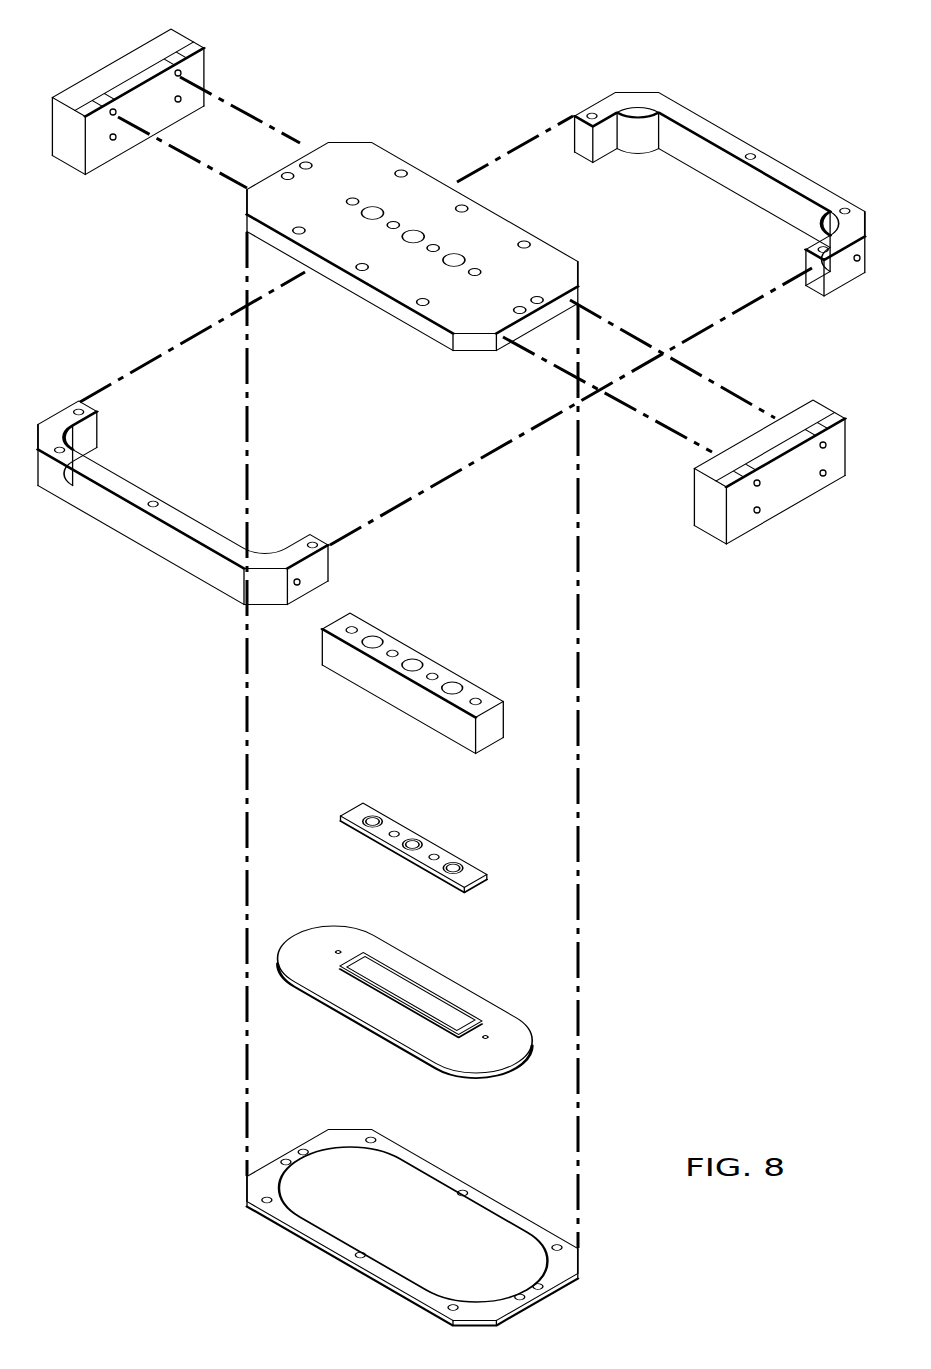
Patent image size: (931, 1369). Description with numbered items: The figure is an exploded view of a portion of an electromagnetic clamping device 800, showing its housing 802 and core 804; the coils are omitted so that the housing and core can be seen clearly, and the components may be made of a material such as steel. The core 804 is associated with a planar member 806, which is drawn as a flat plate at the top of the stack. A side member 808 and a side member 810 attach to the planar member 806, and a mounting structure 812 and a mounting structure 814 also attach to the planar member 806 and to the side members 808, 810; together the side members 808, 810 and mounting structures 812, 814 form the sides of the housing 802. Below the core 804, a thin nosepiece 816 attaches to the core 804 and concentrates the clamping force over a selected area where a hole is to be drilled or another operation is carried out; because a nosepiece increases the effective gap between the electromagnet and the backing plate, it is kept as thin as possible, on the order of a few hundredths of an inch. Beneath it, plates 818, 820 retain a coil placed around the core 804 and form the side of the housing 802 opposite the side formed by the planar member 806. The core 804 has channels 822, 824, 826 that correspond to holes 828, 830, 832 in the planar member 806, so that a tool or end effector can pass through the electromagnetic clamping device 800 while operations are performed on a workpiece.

The electromagnetic clamping device 800 is at (451, 675).
The housing 802 is at (417, 220).
The core 804 is at (416, 665).
The planar member 806 is at (553, 258).
The side member 808 is at (148, 538).
The side member 810 is at (725, 138).
The mounting structure 812 is at (113, 72).
The mounting structure 814 is at (793, 495).
The nosepiece 816 is at (403, 833).
The plate 818 is at (455, 977).
The plate 820 is at (433, 1172).
The channel 822 is at (372, 637).
The channel 824 is at (412, 662).
The channel 826 is at (453, 683).
The hole 828 is at (373, 210).
The hole 830 is at (412, 233).
The hole 832 is at (457, 257).